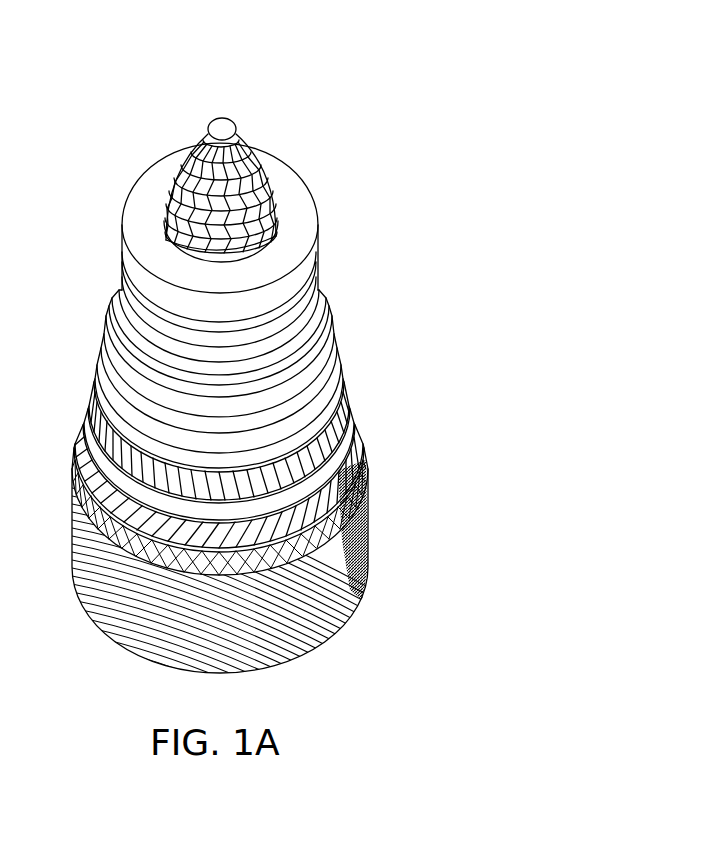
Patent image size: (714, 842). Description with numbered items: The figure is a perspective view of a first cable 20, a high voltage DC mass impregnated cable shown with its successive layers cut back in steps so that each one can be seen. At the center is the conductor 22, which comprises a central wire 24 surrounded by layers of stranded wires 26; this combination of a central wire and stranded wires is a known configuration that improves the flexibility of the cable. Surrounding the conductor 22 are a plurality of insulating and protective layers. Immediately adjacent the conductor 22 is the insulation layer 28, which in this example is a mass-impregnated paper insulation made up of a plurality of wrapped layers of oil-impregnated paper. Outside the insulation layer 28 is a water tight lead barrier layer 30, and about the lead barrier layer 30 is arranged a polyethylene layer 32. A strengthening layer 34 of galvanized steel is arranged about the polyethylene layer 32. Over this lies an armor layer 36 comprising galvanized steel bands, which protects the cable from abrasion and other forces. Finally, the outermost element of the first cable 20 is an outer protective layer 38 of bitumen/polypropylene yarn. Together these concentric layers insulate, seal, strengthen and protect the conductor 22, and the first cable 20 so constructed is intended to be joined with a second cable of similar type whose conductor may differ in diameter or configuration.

The first cable 20 is at (293, 73).
The conductor 22 is at (276, 173).
The central wire 24 is at (225, 130).
The stranded wires 26 is at (275, 180).
The insulation layer 28 is at (305, 238).
The lead barrier layer 30 is at (340, 309).
The polyethylene layer 32 is at (343, 354).
The strengthening layer 34 is at (347, 397).
The armor layer 36 is at (360, 472).
The outer protective layer 38 is at (333, 627).